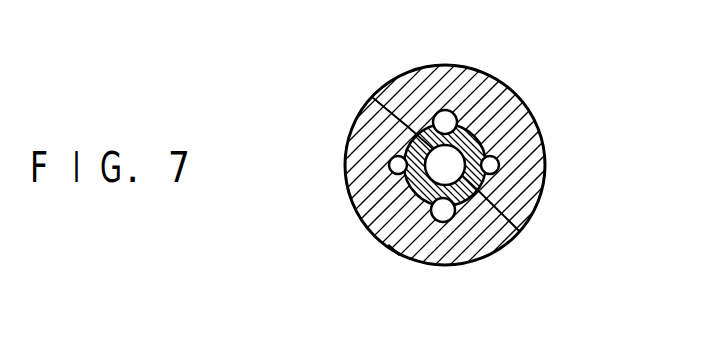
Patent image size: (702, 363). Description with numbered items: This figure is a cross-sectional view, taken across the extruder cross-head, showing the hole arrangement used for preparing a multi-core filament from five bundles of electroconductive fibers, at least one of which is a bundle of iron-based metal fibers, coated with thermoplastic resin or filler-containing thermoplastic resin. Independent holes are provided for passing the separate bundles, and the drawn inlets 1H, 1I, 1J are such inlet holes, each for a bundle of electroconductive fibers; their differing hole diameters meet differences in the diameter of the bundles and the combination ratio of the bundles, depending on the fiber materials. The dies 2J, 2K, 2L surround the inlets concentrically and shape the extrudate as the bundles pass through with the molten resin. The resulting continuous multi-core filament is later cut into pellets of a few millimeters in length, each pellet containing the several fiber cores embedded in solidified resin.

The inlet for a bundle of electroconductive fibers 1H is at (493, 102).
The die 2J is at (490, 143).
The inlet for a bundle of electroconductive fibers 1I is at (433, 108).
The inlet for a bundle of electroconductive fibers 1J is at (389, 168).
The die 2K is at (522, 228).
The die 2L is at (394, 252).